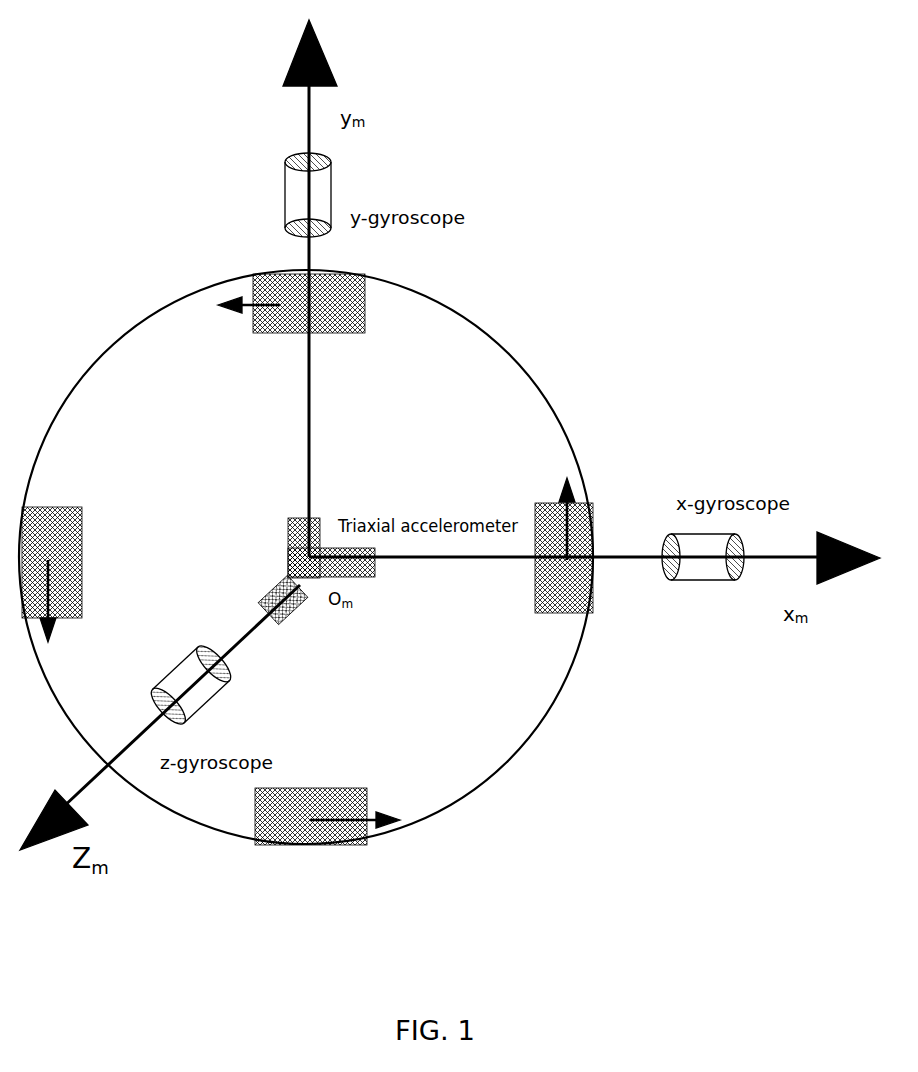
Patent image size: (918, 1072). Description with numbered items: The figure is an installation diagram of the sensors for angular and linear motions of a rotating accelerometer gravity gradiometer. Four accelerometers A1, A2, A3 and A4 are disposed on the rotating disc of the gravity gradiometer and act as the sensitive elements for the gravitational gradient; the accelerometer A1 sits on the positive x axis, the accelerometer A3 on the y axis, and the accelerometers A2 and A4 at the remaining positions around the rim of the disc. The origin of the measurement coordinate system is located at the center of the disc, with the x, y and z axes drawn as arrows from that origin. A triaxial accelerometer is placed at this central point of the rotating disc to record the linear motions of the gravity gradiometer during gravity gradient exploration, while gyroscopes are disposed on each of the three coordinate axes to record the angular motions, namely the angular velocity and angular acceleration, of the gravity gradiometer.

The accelerometer A1 is at (535, 545).
The accelerometer A2 is at (61, 586).
The accelerometer A3 is at (279, 312).
The accelerometer A4 is at (327, 797).